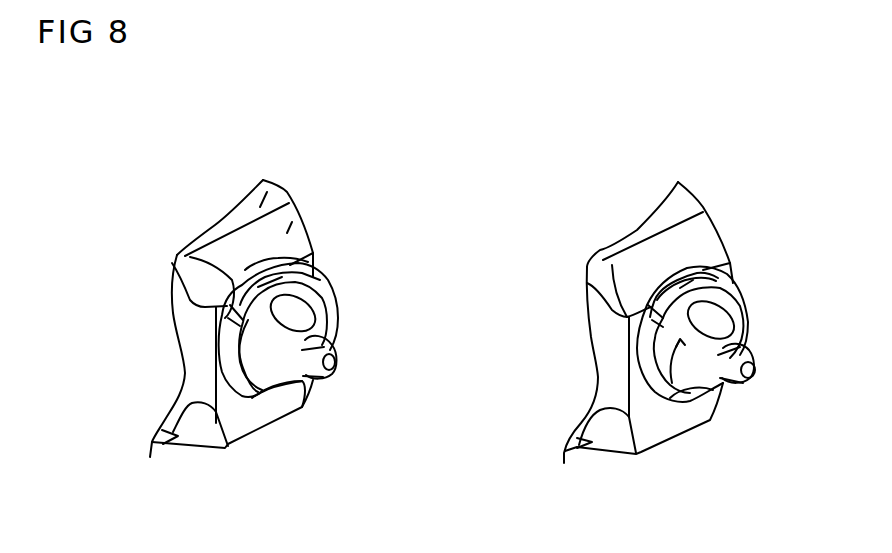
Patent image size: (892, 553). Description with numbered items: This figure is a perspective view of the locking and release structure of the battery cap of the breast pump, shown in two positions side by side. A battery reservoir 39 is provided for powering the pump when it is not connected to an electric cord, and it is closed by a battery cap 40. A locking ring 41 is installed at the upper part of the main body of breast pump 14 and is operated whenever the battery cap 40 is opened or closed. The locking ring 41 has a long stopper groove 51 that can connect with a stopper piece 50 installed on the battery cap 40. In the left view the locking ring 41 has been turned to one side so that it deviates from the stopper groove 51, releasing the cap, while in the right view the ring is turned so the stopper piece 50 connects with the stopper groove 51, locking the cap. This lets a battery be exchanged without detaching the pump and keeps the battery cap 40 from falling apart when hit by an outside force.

The main body of breast pump 14 is at (265, 412).
The battery reservoir 39 is at (280, 182).
The battery cap 40 is at (300, 217).
The locking ring 41 is at (330, 283).
The stopper piece 50 is at (252, 302).
The stopper groove 51 is at (190, 257).